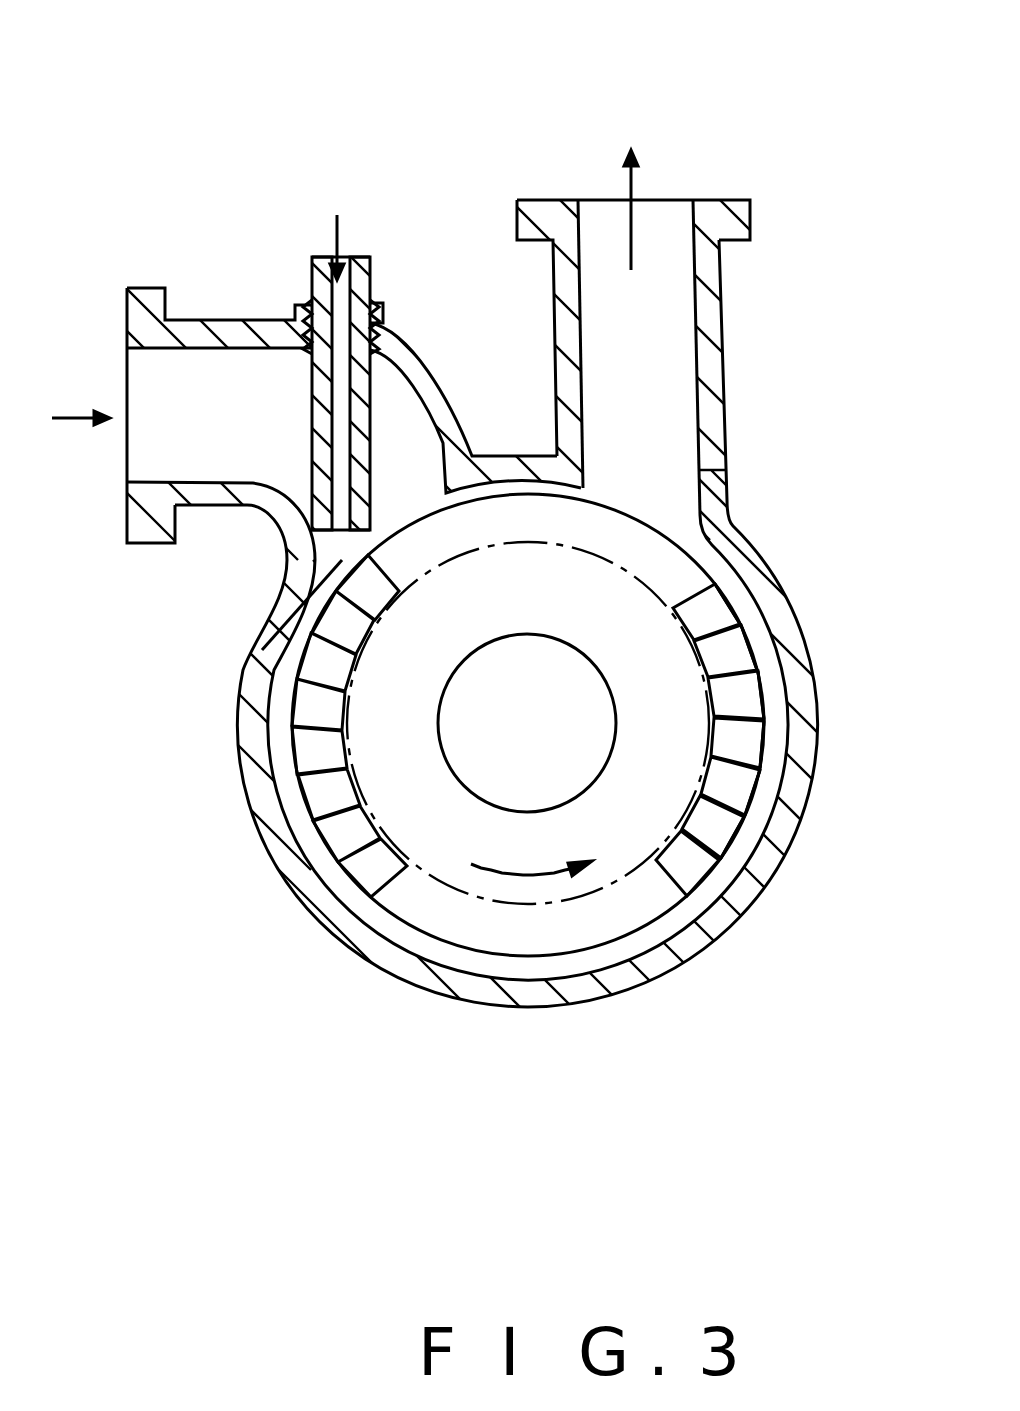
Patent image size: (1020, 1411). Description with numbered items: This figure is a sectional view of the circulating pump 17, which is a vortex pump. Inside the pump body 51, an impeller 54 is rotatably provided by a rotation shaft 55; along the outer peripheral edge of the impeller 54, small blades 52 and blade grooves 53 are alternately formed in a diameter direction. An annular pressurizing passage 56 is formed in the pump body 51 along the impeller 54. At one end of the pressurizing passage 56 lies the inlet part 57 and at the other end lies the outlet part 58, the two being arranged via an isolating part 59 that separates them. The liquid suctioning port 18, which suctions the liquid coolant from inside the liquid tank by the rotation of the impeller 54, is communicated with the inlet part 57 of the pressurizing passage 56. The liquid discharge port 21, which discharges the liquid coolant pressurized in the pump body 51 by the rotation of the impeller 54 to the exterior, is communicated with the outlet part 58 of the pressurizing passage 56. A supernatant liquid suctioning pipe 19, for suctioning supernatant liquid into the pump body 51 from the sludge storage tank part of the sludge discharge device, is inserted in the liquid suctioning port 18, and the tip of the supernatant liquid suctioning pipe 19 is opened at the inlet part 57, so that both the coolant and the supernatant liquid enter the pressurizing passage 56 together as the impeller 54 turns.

The circulating pump 17 is at (453, 154).
The liquid suctioning port 18 is at (175, 368).
The supernatant liquid suctioning pipe 19 is at (353, 282).
The liquid discharge port 21 is at (656, 222).
The pump body 51 is at (505, 990).
The small blades 52 is at (750, 787).
The blade grooves 53 is at (745, 700).
The impeller 54 is at (706, 873).
The rotation shaft 55 is at (540, 712).
The pressurizing passage 56 is at (415, 943).
The inlet part 57 is at (262, 650).
The outlet part 58 is at (673, 507).
The isolating part 59 is at (500, 470).